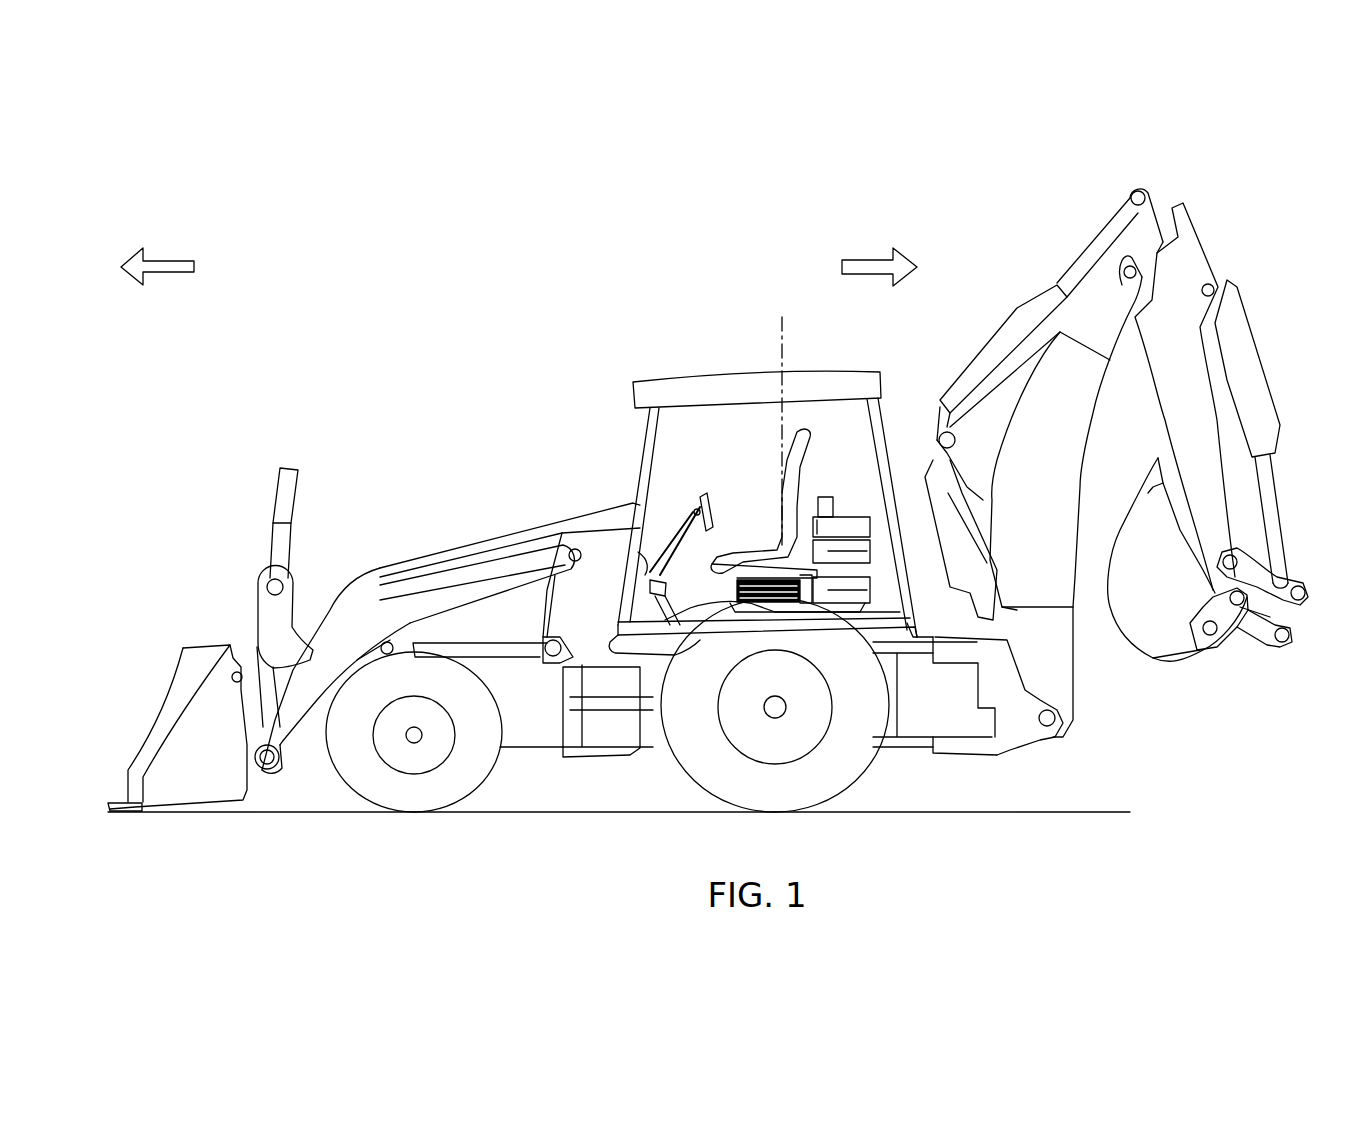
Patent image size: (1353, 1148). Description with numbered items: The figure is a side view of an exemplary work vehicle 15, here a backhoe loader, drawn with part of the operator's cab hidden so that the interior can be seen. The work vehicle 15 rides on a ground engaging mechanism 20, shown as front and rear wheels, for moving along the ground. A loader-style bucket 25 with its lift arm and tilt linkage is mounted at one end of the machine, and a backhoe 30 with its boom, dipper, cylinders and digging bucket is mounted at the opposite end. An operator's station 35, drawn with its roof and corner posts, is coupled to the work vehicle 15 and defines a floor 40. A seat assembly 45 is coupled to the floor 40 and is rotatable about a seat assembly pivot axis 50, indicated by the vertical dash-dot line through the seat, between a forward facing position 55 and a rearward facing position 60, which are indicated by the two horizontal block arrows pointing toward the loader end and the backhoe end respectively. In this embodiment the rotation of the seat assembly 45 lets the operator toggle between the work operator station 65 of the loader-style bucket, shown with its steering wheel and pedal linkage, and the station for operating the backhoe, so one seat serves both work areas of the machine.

The work vehicle 15 is at (434, 175).
The ground engaging mechanism 20 is at (455, 781).
The loader-style bucket 25 is at (268, 617).
The backhoe 30 is at (1108, 232).
The operator's station 35 is at (728, 372).
The floor 40 is at (690, 605).
The seat assembly 45 is at (748, 477).
The seat assembly pivot axis 50 is at (778, 415).
The forward facing position 55 is at (182, 266).
The rearward facing position 60 is at (852, 266).
The work operator station 65 is at (697, 508).